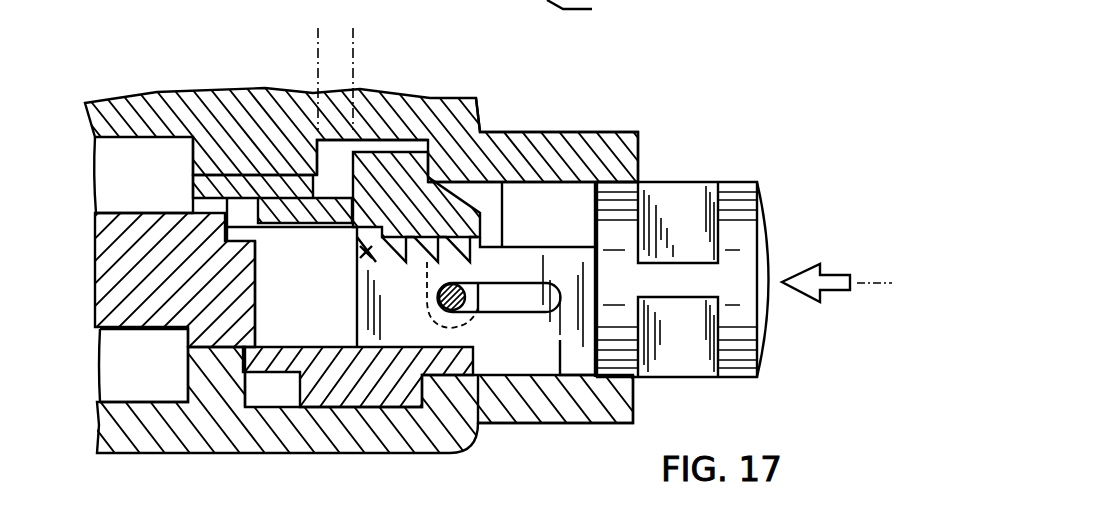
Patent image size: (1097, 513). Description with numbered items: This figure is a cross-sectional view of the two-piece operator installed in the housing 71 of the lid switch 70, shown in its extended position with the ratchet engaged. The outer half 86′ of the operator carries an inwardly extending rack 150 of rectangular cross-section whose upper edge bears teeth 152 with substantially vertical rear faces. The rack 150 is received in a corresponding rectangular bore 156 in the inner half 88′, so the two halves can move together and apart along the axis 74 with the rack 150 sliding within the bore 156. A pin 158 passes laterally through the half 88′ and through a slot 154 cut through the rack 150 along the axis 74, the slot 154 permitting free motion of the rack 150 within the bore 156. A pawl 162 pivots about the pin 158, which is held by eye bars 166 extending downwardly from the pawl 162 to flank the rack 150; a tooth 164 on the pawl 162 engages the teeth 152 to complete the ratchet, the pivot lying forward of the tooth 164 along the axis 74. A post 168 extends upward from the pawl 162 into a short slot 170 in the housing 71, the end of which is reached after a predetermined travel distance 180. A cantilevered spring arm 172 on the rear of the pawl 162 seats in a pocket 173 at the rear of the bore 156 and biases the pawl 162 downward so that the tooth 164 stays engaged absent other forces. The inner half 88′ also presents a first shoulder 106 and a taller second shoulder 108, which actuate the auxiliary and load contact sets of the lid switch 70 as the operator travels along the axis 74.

The housing 71 is at (149, 94).
The pawl 162 is at (418, 158).
The short slot 170 is at (330, 127).
The predetermined travel distance 180 is at (335, 47).
The post 168 is at (382, 152).
The cantilevered spring arm 172 is at (228, 172).
The first shoulder 106 is at (193, 203).
The pocket 173 is at (225, 243).
The second shoulder 108 is at (95, 308).
The half of the operator 88′ is at (197, 346).
The rectangular bore 156 is at (258, 315).
The tooth 164 is at (370, 255).
The teeth 152 is at (356, 300).
The rack 150 is at (567, 338).
The slot 154 is at (510, 303).
The pin 158 is at (460, 290).
The eye bars 166 is at (478, 368).
The lid switch 70 is at (681, 173).
The half of the operator 86′ is at (740, 182).
The axis 74 is at (873, 283).